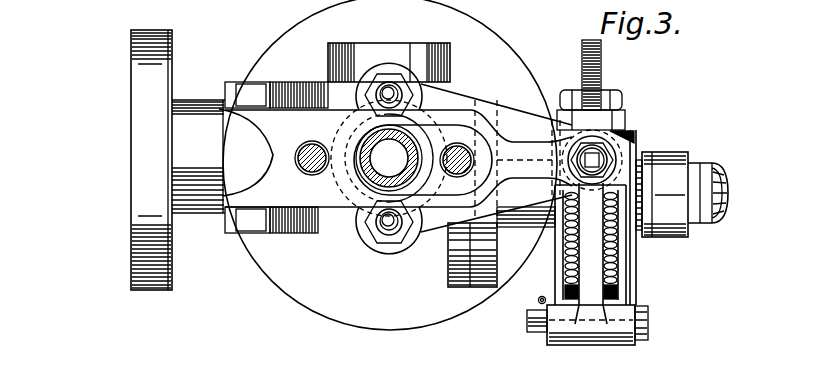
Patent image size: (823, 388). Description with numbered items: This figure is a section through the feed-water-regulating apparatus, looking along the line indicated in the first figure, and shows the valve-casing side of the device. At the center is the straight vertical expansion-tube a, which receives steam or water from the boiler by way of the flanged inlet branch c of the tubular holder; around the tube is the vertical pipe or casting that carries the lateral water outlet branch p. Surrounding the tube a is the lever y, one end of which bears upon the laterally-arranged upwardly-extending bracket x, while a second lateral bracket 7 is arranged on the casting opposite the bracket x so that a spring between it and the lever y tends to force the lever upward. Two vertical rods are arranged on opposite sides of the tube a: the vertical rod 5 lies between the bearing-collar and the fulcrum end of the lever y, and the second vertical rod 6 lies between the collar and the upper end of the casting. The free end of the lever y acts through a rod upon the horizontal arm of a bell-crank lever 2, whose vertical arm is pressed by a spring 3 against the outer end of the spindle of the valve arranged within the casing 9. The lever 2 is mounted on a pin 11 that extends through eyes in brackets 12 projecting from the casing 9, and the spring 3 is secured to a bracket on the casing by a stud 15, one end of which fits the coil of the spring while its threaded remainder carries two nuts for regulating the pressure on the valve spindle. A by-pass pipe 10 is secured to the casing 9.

The flanged inlet branch c is at (151, 160).
The bracket x is at (300, 83).
The lever y is at (256, 152).
The water outlet branch p is at (353, 63).
The expansion-tube a is at (411, 158).
The vertical rod 5 is at (298, 168).
The second vertical rod 6 is at (456, 148).
The second lateral bracket 7 is at (560, 123).
The stud 15 is at (601, 80).
The spring 3 is at (634, 142).
The bell-crank lever 2 is at (591, 253).
The casing 9 is at (563, 238).
The brackets 12 is at (555, 277).
The pin 11 is at (532, 328).
The by-pass pipe 10 is at (698, 228).